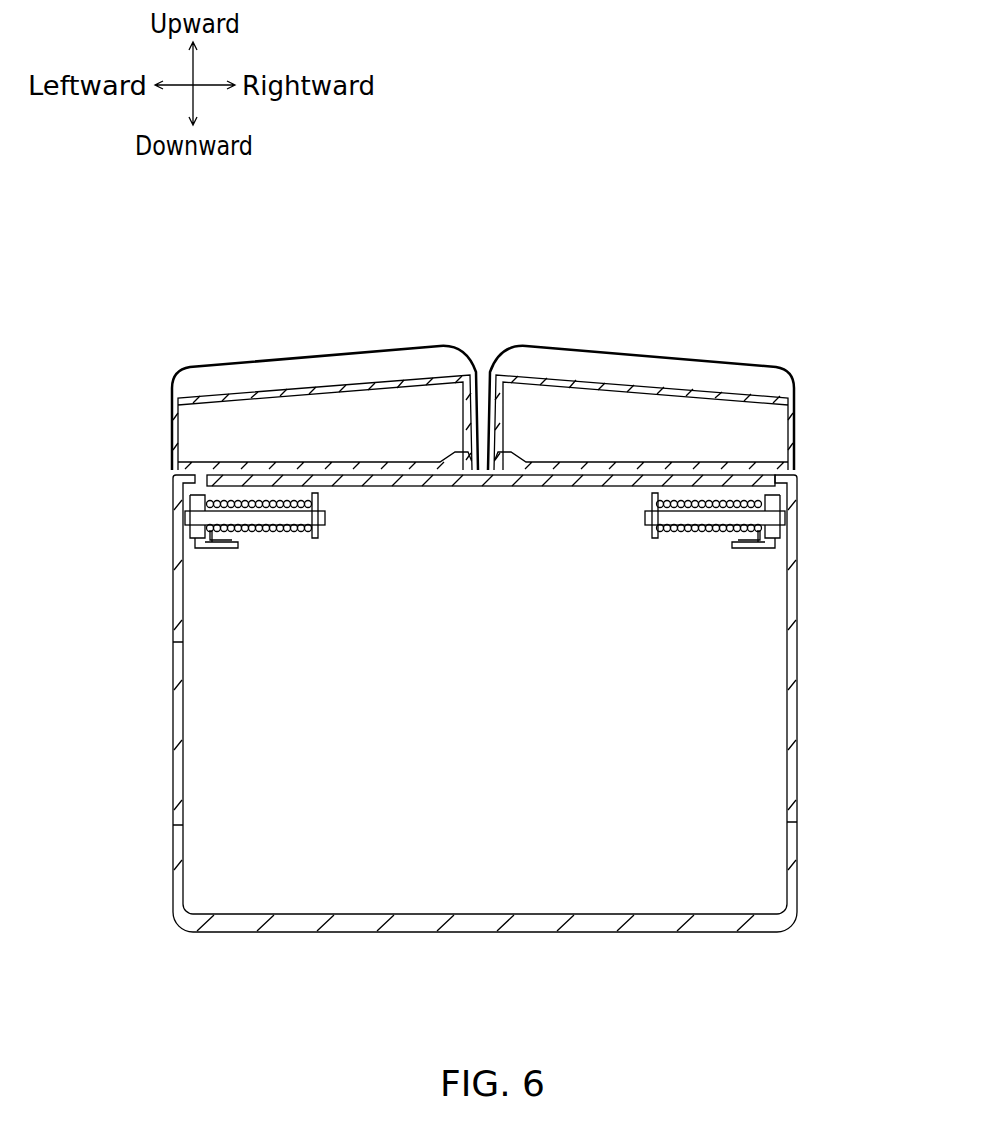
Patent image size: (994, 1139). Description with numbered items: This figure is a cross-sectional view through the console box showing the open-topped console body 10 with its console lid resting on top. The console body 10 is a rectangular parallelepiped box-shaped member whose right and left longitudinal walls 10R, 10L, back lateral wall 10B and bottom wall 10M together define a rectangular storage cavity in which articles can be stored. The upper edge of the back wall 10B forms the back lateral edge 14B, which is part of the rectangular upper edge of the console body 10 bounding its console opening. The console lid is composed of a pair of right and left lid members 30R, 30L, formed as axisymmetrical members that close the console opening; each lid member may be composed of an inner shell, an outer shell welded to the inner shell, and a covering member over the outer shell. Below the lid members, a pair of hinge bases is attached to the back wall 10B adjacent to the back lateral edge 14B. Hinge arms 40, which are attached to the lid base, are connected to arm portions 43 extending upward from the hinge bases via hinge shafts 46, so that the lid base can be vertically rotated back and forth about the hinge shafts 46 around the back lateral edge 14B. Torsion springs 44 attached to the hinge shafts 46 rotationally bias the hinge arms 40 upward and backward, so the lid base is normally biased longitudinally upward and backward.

The console body 10 is at (800, 715).
The left longitudinal wall 10L is at (178, 752).
The right longitudinal wall 10R is at (790, 784).
The bottom wall 10M is at (525, 923).
The back lateral wall 10B is at (665, 660).
The back lateral edge 14B is at (718, 472).
The left lid member 30L is at (315, 370).
The right lid member 30R is at (653, 368).
The hinge arm 40 is at (205, 545).
The arm portion 43 is at (195, 497).
The torsion spring 44 is at (270, 530).
The hinge shaft 46 is at (205, 518).